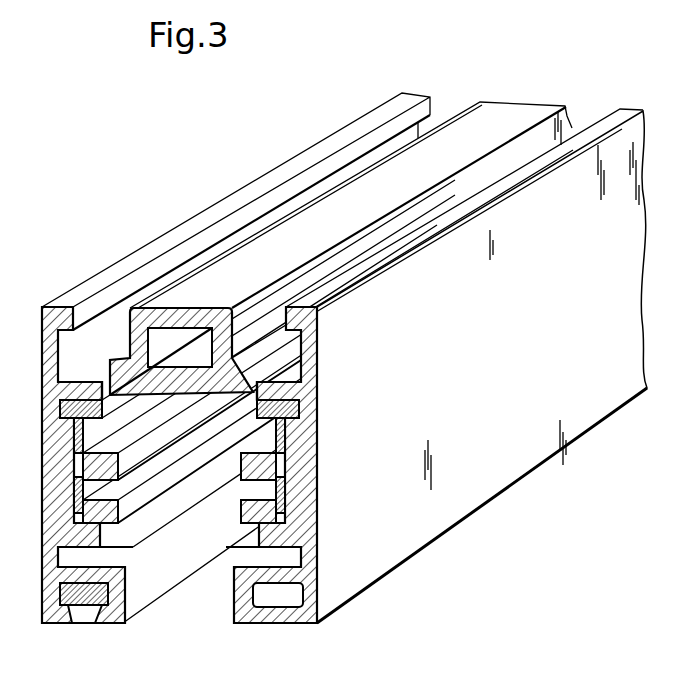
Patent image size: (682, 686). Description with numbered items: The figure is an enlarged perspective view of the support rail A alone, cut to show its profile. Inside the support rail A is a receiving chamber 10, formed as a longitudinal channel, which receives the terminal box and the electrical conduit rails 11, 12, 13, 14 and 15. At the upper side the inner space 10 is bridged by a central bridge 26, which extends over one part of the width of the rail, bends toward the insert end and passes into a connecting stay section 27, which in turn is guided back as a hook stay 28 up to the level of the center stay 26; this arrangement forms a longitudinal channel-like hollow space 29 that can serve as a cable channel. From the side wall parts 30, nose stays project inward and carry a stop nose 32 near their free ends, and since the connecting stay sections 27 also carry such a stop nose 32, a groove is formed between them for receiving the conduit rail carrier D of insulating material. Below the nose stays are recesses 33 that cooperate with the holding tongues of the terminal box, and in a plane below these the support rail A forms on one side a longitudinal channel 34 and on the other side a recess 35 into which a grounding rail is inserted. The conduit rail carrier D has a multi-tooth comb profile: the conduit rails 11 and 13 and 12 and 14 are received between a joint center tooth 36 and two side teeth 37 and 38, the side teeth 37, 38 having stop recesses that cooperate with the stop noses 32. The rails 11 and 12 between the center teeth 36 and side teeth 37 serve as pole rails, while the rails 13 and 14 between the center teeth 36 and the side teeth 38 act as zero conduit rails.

The receiving chamber 10 is at (207, 606).
The conduit rail 11 is at (72, 436).
The conduit rail 12 is at (288, 440).
The conduit rail 13 is at (82, 510).
The conduit rail 14 is at (246, 504).
The conduit rail 15 is at (80, 610).
The central bridge 26 is at (516, 108).
The connecting stay section 27 is at (106, 384).
The hook stay 28 is at (385, 118).
The longitudinal channel-like hollow space 29 is at (66, 341).
The side wall part 30 is at (48, 536).
The stop nose 32 is at (96, 396).
The recess 33 is at (60, 557).
The longitudinal channel 34 is at (300, 607).
The recess 35 is at (118, 607).
The center tooth 36 is at (90, 500).
The side tooth 37 is at (68, 409).
The side tooth 38 is at (222, 536).
The support rail A is at (455, 512).
The conduit rail carrier D is at (72, 456).